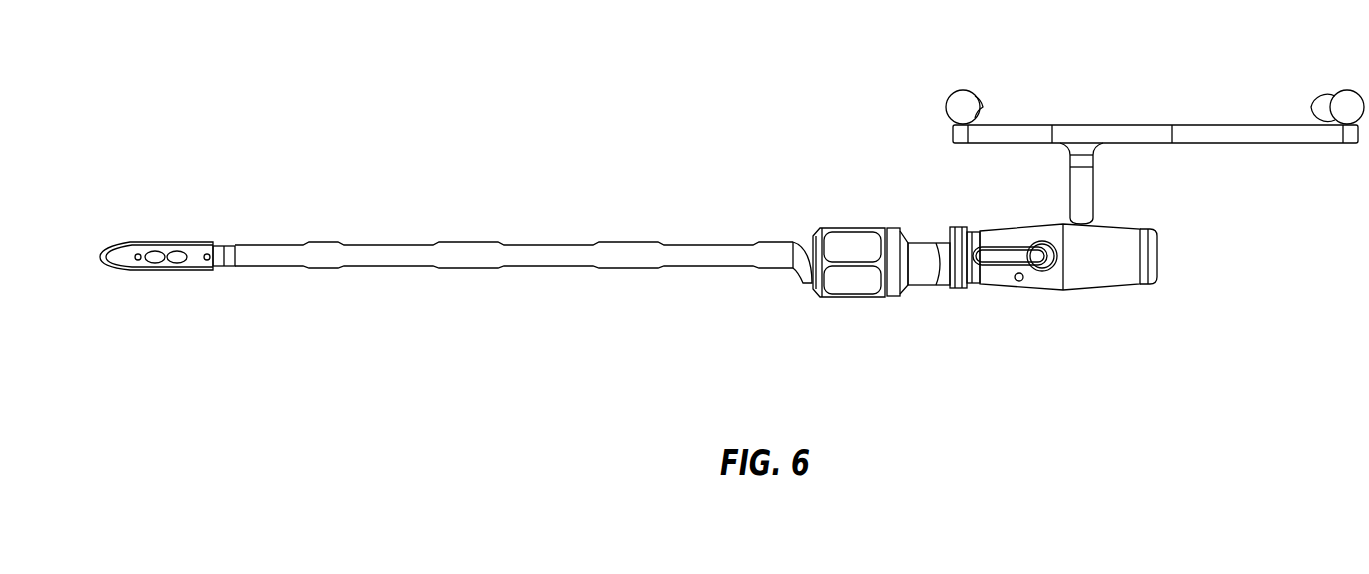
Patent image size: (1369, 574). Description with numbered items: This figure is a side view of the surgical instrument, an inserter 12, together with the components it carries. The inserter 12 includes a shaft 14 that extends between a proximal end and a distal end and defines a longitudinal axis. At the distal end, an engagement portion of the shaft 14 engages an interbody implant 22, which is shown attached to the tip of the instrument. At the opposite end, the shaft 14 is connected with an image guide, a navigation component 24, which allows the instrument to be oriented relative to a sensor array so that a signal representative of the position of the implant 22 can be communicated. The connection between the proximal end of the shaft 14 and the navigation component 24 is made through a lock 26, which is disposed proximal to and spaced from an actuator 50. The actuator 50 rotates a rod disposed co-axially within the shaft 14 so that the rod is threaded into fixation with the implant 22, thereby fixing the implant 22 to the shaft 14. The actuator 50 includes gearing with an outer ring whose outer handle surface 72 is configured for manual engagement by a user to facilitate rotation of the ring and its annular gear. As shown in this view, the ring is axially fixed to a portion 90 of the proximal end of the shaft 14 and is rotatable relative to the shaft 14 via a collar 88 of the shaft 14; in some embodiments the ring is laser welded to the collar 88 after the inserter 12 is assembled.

The inserter 12 is at (316, 226).
The shaft 14 is at (472, 243).
The interbody implant 22 is at (113, 236).
The navigation component 24 is at (898, 118).
The lock 26 is at (978, 307).
The actuator 50 is at (818, 205).
The outer handle surface 72 is at (862, 276).
The collar 88 is at (893, 230).
The portion 90 is at (897, 230).